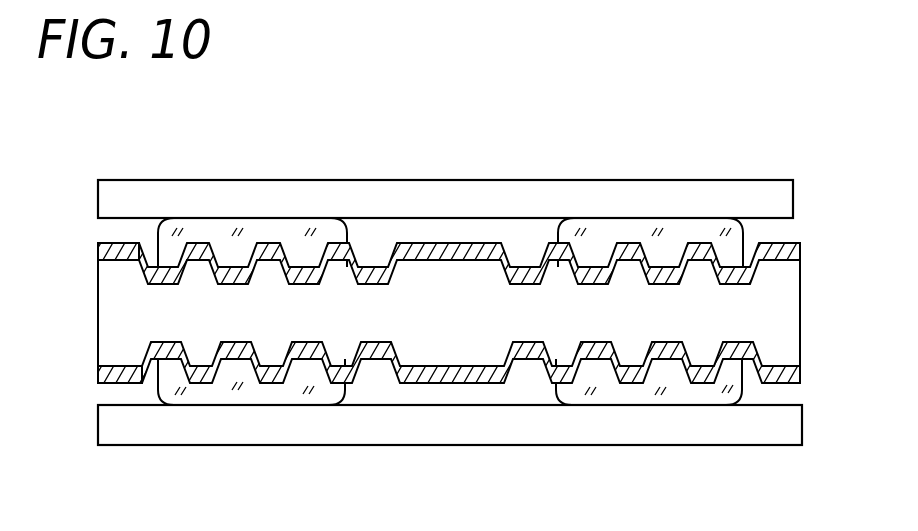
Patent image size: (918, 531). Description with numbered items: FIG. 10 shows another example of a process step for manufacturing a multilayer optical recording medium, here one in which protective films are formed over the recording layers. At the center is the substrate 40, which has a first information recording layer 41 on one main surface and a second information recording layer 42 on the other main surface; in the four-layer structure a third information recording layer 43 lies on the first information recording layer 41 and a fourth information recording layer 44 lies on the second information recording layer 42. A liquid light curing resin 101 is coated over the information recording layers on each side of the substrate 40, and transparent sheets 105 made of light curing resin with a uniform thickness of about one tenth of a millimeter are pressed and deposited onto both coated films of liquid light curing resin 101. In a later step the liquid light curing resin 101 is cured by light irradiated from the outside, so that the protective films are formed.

The liquid light curing resin 101 is at (223, 232).
The transparent sheet 105 is at (412, 193).
The second information recording layer 42 is at (456, 255).
The fourth information recording layer 44 is at (100, 248).
The substrate 40 is at (777, 313).
The third information recording layer 43 is at (100, 369).
The first information recording layer 41 is at (456, 369).